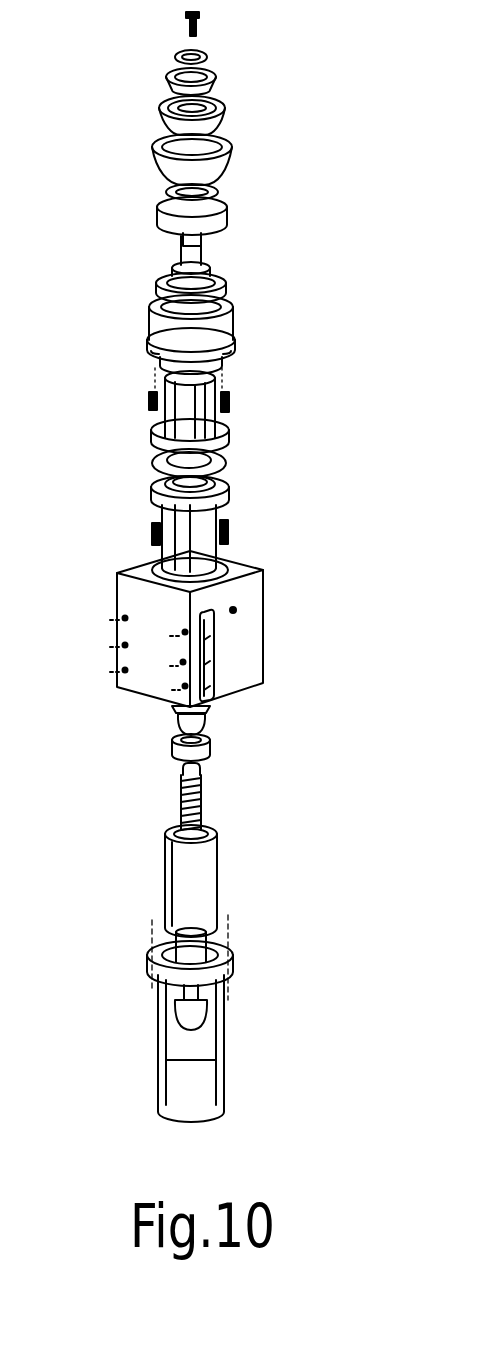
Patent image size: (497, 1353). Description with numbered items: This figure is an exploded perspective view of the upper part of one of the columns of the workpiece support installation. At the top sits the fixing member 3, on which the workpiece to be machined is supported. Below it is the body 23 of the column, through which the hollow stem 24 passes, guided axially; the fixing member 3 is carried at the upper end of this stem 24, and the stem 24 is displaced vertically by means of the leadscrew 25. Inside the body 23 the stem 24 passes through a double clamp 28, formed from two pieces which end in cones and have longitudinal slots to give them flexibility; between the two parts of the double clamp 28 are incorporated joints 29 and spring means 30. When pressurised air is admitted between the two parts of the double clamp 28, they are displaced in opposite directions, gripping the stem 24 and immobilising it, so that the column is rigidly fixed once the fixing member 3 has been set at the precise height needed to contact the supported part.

The fixing member 3 is at (237, 145).
The body 23 is at (243, 627).
The hollow stem 24 is at (197, 888).
The leadscrew 25 is at (202, 798).
The double clamp 28 is at (155, 518).
The joints 29 is at (228, 484).
The spring means 30 is at (225, 402).